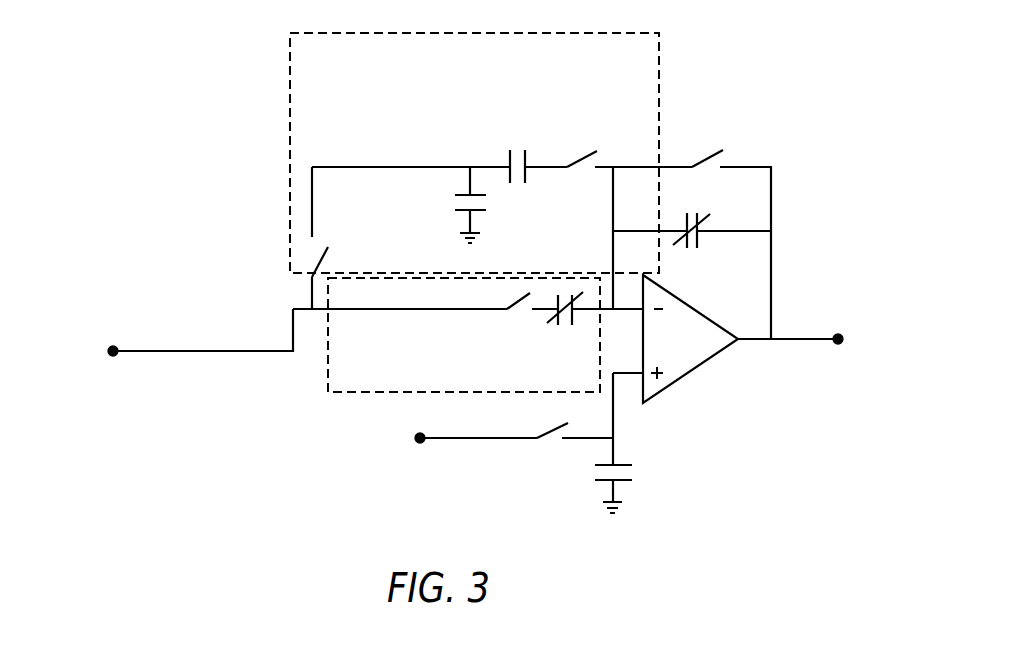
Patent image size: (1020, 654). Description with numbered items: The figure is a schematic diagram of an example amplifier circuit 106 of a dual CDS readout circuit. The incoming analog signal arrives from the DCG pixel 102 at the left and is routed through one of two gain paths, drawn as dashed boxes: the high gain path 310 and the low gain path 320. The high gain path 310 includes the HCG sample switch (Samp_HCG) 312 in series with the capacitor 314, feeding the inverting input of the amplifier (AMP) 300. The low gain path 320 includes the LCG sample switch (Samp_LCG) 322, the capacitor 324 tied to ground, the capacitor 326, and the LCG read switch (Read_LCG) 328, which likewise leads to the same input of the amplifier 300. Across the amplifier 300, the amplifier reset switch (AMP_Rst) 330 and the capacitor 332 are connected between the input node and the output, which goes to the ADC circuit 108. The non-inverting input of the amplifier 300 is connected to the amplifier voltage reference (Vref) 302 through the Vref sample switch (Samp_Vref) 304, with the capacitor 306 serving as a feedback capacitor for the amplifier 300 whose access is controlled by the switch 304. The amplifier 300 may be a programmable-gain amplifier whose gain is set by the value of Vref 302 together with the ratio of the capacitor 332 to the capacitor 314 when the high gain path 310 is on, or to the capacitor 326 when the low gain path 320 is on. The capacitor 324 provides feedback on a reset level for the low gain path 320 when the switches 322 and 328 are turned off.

The amplifier circuit 106 is at (233, 133).
The low gain path 320 is at (568, 66).
The high gain path 310 is at (563, 379).
The LCG sample switch (Samp_LCG) 322 is at (303, 260).
The capacitor (CAP) 324 is at (420, 205).
The capacitor (CAP) 326 is at (478, 149).
The LCG read switch (Read_LCG) 328 is at (597, 125).
The amplifier reset switch (AMP_Rst) 330 is at (743, 127).
The capacitor (CAP) 332 is at (713, 218).
The HCG sample switch (Samp_HCG) 312 is at (438, 294).
The capacitor (CAP) 314 is at (527, 322).
The Vref sample switch (Samp_Vref) 304 is at (501, 416).
The amplifier voltage reference (Vref) 302 is at (428, 438).
The capacitor (CAP) 306 is at (658, 488).
The DCG pixel 102 is at (164, 364).
The amplifier (AMP) 300 is at (682, 350).
The ADC circuit 108 is at (846, 337).